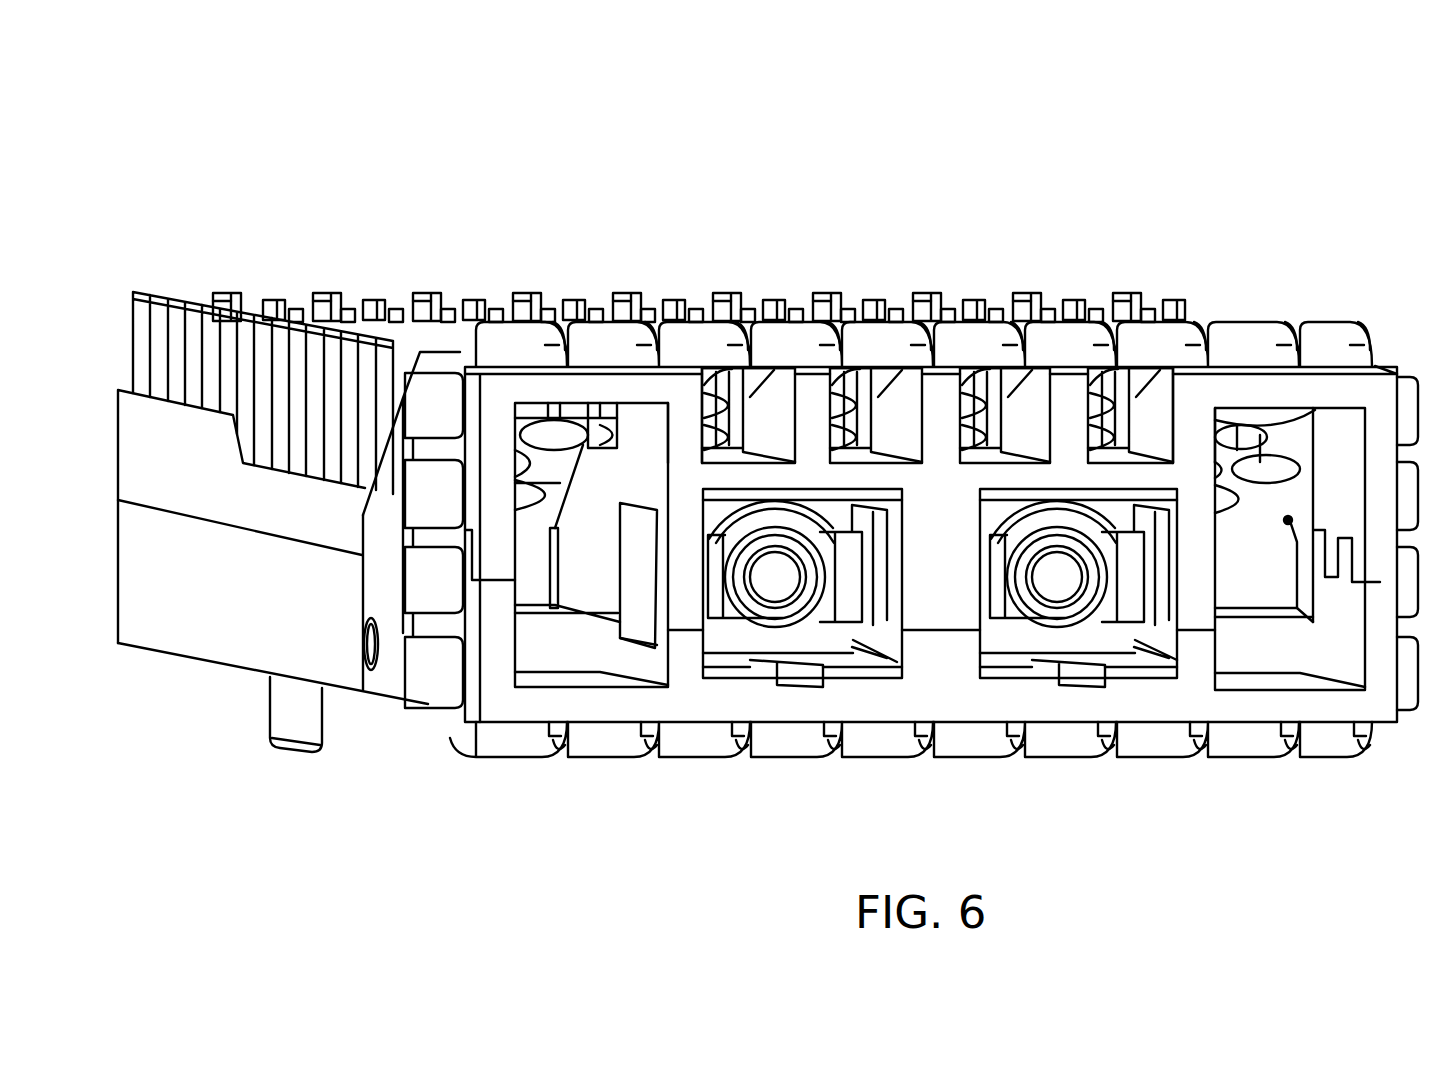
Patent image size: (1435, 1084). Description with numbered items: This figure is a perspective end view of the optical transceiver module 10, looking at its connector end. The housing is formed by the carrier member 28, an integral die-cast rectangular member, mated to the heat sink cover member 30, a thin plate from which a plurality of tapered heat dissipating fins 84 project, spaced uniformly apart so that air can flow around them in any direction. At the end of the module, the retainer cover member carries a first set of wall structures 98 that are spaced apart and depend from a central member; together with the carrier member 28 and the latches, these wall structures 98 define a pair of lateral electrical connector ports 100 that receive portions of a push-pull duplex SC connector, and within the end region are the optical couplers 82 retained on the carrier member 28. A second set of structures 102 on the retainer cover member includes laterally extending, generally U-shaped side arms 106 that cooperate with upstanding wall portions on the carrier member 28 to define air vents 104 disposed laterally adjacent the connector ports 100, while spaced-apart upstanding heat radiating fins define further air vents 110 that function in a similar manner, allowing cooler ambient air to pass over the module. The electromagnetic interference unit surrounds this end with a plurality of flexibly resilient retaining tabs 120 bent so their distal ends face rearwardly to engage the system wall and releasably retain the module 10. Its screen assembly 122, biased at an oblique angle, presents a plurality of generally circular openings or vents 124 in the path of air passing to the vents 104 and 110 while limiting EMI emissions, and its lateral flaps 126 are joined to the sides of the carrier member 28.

The optical transceiver module 10 is at (571, 158).
The carrier member 28 is at (152, 635).
The heat sink cover member 30 is at (128, 470).
The optical couplers 82 is at (787, 612).
The heat dissipating fins 84 is at (330, 292).
The first set of wall structures 98 is at (680, 580).
The lateral electrical connector ports 100 is at (898, 663).
The second set of structures 102 is at (704, 360).
The air vents 104 is at (610, 460).
The U-shaped side arms 106 is at (661, 385).
The air vents 110 is at (752, 395).
The retaining tabs 120 is at (1410, 400).
The screen assembly 122 is at (380, 575).
The circular openings or vents 124 is at (560, 420).
The lateral flaps 126 is at (385, 685).